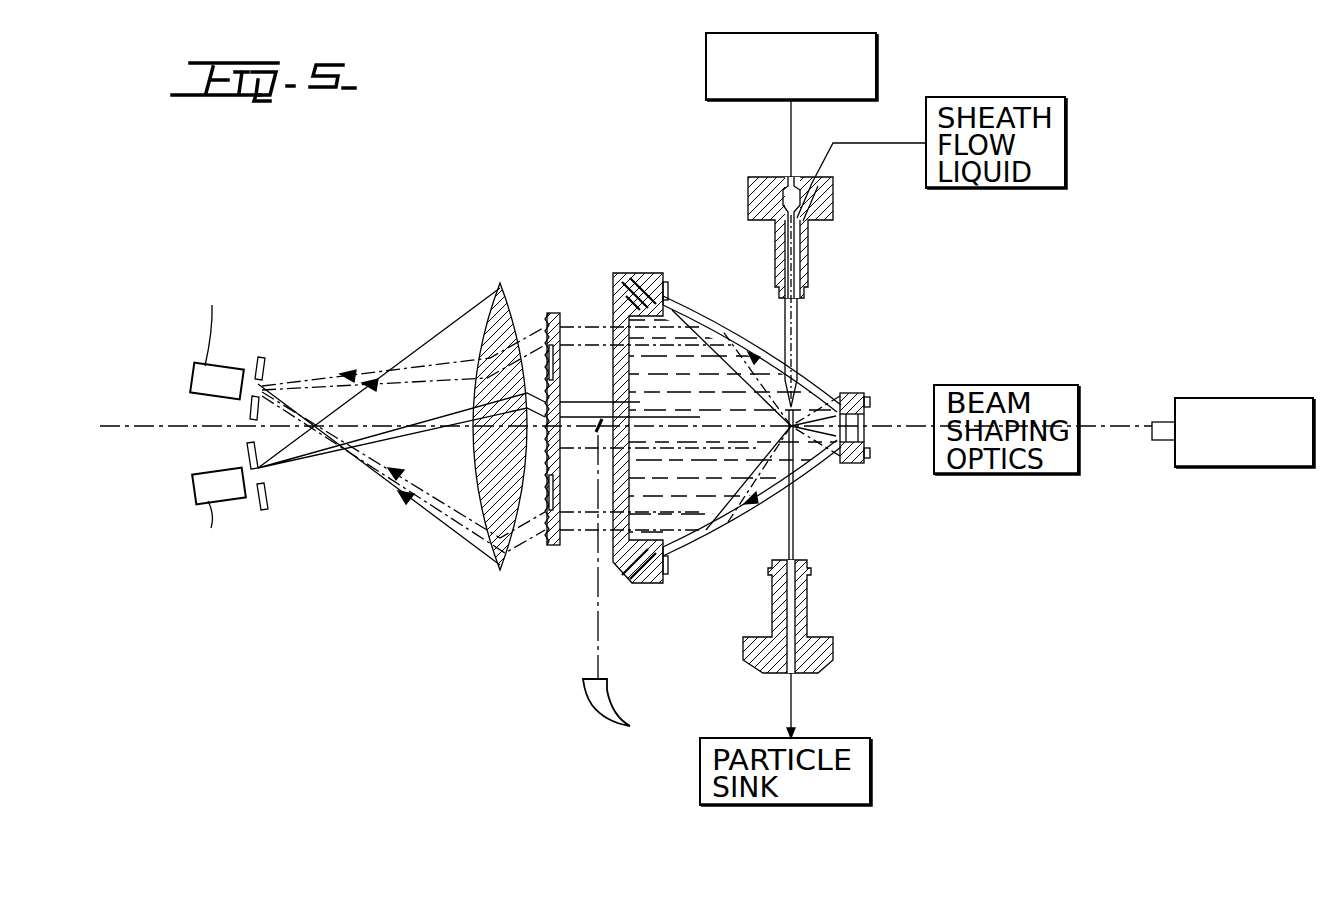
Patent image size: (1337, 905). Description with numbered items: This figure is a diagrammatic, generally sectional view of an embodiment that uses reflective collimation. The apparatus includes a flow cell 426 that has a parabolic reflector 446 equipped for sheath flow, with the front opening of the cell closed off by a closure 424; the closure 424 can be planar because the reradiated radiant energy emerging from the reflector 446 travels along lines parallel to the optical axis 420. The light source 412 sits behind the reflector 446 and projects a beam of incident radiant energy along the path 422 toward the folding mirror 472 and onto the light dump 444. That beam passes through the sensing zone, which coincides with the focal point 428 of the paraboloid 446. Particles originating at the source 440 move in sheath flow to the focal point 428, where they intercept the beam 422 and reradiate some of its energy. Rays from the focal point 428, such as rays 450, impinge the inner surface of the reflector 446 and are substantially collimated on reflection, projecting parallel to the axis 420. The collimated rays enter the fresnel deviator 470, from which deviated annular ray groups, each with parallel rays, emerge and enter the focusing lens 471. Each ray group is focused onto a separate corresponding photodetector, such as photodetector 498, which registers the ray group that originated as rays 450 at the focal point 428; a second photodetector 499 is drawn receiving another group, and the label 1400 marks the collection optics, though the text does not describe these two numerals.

The light source 412 is at (1224, 397).
The optical axis 420 is at (178, 425).
The path of incident radiant energy beam 422 is at (1122, 426).
The closure 424 is at (605, 318).
The flow cell 426 is at (824, 349).
The focal point 428 is at (813, 460).
The particle source 440 is at (878, 66).
The light dump 444 is at (593, 690).
The parabolic reflector 446 is at (731, 325).
The rays 450 is at (754, 380).
The fresnel deviator 470 is at (556, 300).
The focusing lens 471 is at (483, 335).
The folding mirror 472 is at (599, 420).
The photodetector 498 is at (213, 366).
The photodetector 499 is at (224, 500).
The optical assembly 1400 is at (572, 210).